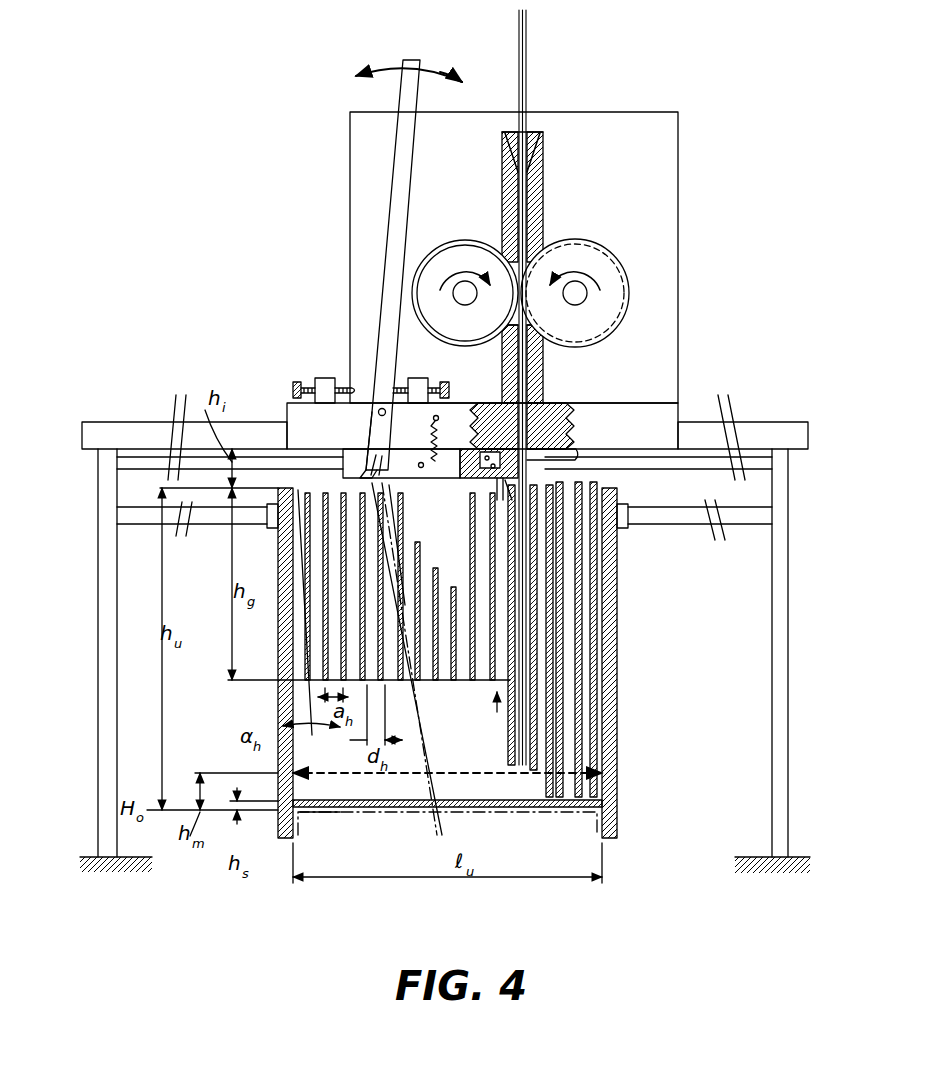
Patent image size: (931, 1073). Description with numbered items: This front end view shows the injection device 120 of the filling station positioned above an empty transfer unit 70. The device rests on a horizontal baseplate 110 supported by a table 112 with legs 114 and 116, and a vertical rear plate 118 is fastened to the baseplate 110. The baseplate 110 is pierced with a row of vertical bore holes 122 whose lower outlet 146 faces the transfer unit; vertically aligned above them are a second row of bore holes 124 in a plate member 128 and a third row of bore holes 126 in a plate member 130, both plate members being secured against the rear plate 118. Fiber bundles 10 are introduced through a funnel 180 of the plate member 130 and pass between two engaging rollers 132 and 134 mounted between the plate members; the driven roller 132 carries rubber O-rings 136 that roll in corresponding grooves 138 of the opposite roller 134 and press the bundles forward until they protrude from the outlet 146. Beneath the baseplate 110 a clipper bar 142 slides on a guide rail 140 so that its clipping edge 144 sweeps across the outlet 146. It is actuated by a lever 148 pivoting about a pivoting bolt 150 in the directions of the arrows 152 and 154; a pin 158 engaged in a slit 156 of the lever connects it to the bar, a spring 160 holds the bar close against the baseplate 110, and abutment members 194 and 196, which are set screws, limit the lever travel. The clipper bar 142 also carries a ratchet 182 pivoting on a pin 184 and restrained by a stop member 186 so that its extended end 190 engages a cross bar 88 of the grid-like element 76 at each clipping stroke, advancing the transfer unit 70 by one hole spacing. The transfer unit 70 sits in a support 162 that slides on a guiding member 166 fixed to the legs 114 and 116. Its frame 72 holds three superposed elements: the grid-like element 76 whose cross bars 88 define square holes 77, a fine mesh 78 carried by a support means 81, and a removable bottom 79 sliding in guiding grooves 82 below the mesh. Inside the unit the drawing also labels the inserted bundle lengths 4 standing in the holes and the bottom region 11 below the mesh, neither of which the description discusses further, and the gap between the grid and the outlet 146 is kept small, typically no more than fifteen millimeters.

The rods 4 is at (597, 744).
The fiber bundles 10 is at (527, 22).
The inner liner 11 is at (348, 820).
The transfer unit 70 is at (626, 668).
The frame 72 is at (617, 712).
The grid-like element 76 is at (490, 717).
The square holes 77 is at (330, 658).
The fine mesh 78 is at (475, 772).
The bottom 79 is at (526, 818).
The support means 81 is at (618, 773).
The guiding grooves 82 is at (606, 805).
The cross bars 88 is at (446, 686).
The baseplate 110 is at (636, 403).
The table 112 is at (775, 422).
The leg 114 is at (772, 626).
The leg 116 is at (128, 717).
The rear plate 118 is at (636, 112).
The injection device 120 is at (684, 272).
The bore holes 122 is at (568, 414).
The bore holes 124 is at (545, 385).
The bore holes 126 is at (541, 185).
The plate member 128 is at (544, 350).
The plate member 130 is at (508, 166).
The driven roller 132 is at (450, 240).
The opposite roller 134 is at (578, 250).
The rubber O-rings 136 is at (466, 242).
The groove 138 is at (622, 270).
The guide rail 140 is at (714, 466).
The clipper bar 142 is at (414, 477).
The clipping edge 144 is at (483, 404).
The outlet 146 is at (558, 456).
The lever 148 is at (401, 162).
The pivoting bolt 150 is at (380, 408).
The arrow 152 is at (387, 75).
The arrow 154 is at (472, 84).
The slit 156 is at (360, 450).
The pin 158 is at (358, 462).
The spring 160 is at (415, 437).
The support 162 is at (624, 529).
The guiding member 166 is at (746, 525).
The funnel 180 is at (543, 140).
The ratchet 182 is at (497, 492).
The pin 184 is at (486, 484).
The stop member 186 is at (478, 478).
The extended end 190 is at (500, 502).
The abutment member 194 is at (292, 388).
The abutment member 196 is at (418, 380).